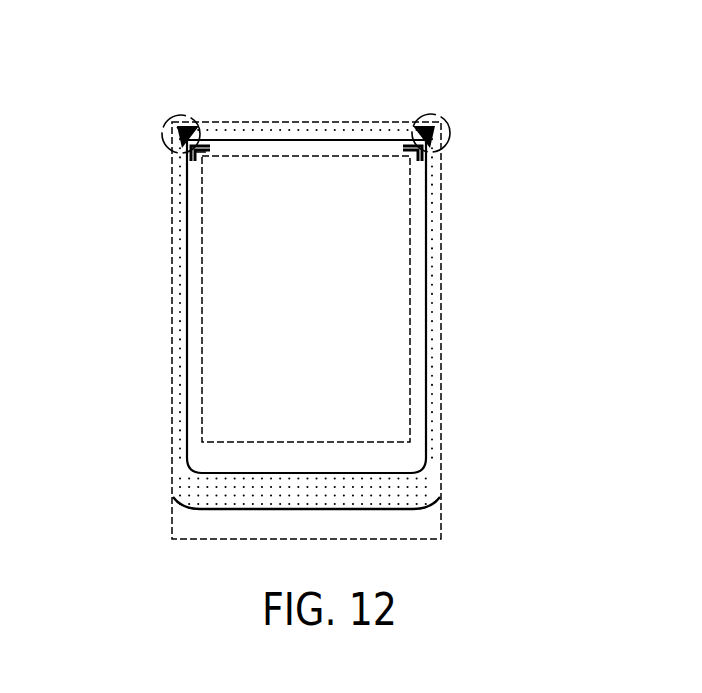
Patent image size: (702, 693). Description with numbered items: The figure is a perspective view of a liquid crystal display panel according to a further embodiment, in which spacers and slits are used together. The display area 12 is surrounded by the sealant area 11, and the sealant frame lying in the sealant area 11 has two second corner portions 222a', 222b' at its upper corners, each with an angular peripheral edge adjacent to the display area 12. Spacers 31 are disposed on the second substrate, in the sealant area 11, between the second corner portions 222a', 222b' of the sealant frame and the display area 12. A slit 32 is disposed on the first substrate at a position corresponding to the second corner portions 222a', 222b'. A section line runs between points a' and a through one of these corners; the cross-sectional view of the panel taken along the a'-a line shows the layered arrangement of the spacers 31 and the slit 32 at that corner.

The sealant area 11 is at (195, 250).
The display area 12 is at (215, 288).
The spacer 31 is at (191, 152).
The slit 32 is at (177, 139).
The a'-a line a is at (216, 175).
The a'-a line a' is at (161, 109).
The second corner portion 222a' is at (188, 104).
The second corner portion 222b' is at (463, 104).